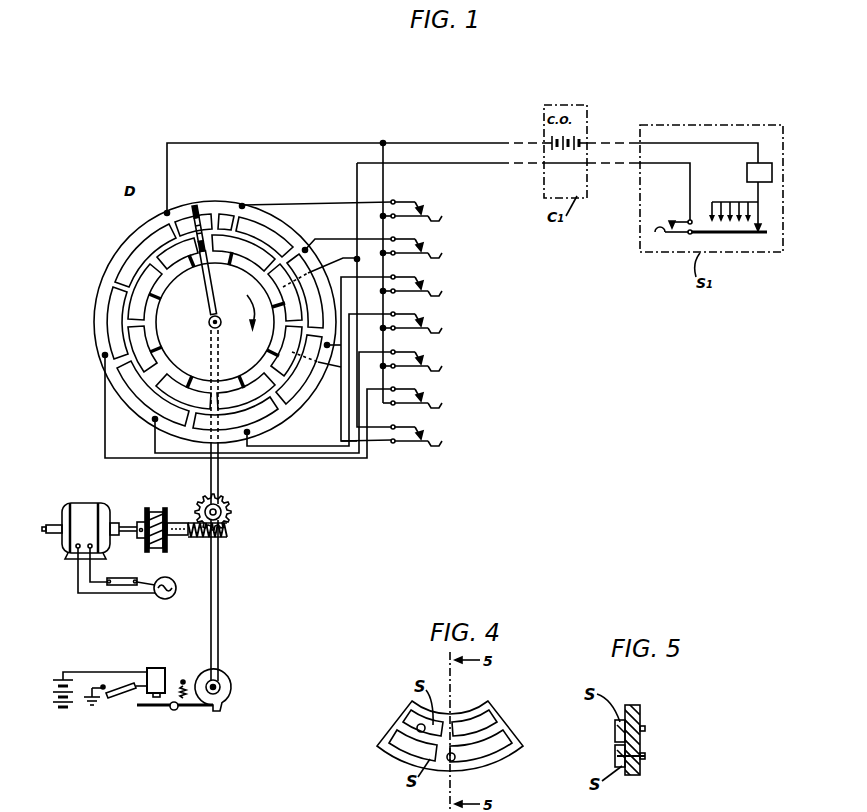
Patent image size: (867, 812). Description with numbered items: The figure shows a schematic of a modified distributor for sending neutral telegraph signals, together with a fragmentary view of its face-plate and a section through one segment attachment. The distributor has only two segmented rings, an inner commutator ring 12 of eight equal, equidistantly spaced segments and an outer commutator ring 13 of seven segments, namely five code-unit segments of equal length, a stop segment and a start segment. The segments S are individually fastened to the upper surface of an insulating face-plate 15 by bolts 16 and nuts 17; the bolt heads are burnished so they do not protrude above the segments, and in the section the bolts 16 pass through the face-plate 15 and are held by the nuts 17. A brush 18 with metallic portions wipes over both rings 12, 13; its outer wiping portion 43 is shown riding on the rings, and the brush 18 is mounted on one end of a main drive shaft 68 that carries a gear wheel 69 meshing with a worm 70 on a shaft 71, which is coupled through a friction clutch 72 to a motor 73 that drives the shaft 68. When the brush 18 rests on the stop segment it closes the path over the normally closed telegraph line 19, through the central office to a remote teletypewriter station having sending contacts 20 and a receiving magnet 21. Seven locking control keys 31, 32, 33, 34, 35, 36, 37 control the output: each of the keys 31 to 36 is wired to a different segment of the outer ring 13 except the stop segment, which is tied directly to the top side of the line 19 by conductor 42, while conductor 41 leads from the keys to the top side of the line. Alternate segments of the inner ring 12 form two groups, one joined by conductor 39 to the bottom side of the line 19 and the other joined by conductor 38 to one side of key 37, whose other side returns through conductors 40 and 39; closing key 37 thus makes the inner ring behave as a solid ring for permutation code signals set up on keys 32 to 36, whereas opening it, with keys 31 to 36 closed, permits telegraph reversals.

In FIG. 1, the inner commutator ring 12 is at (133, 253).
In FIG. 1, the outer commutator ring 13 is at (112, 279).
In FIG. 1, the face-plate 15 is at (96, 326).
In FIG. 4, the face-plate 15 is at (395, 760).
In FIG. 5, the face-plate 15 is at (632, 776).
In FIG. 4, the bolts 16 is at (418, 725).
In FIG. 5, the bolts 16 is at (645, 729).
In FIG. 5, the nuts 17 is at (645, 727).
In FIG. 1, the brush 18 is at (210, 297).
In FIG. 1, the telegraph line 19 is at (523, 181).
In FIG. 1, the sending contacts 20 is at (747, 228).
In FIG. 1, the receiving magnet 21 is at (745, 173).
In FIG. 1, the locking control key 31 is at (425, 209).
In FIG. 1, the locking control key 32 is at (425, 246).
In FIG. 1, the locking control key 33 is at (425, 284).
In FIG. 1, the locking control key 34 is at (425, 321).
In FIG. 1, the locking control key 35 is at (425, 359).
In FIG. 1, the locking control key 36 is at (425, 396).
In FIG. 1, the locking control key 37 is at (425, 434).
In FIG. 1, the conductor 38 is at (380, 444).
In FIG. 1, the conductor 39 is at (343, 258).
In FIG. 1, the conductor 40 is at (385, 432).
In FIG. 1, the conductor 41 is at (384, 191).
In FIG. 1, the conductor 42 is at (233, 142).
In FIG. 1, the contact brush 43 is at (184, 238).
In FIG. 1, the main drive shaft 68 is at (219, 488).
In FIG. 1, the gear wheel 69 is at (232, 518).
In FIG. 1, the worm 70 is at (224, 535).
In FIG. 1, the shaft 71 is at (193, 538).
In FIG. 1, the friction clutch 72 is at (159, 508).
In FIG. 1, the motor 73 is at (88, 503).